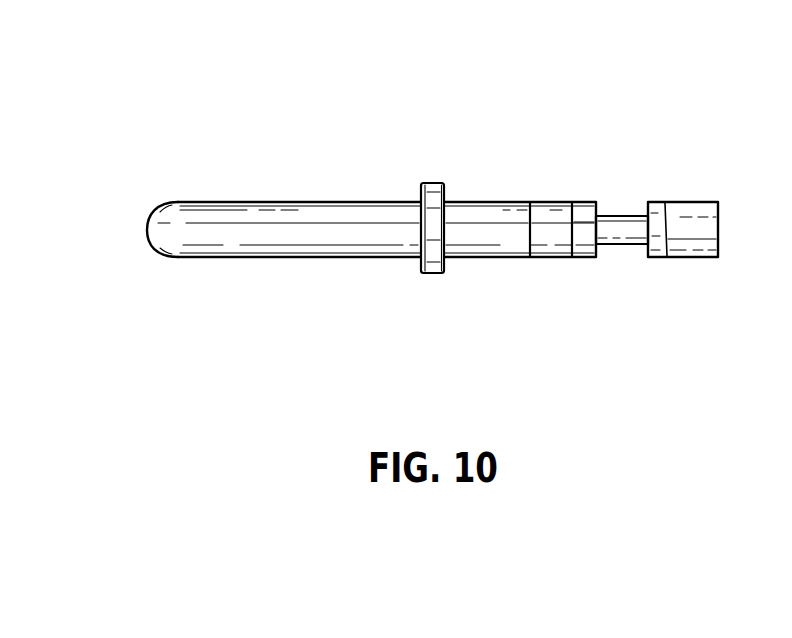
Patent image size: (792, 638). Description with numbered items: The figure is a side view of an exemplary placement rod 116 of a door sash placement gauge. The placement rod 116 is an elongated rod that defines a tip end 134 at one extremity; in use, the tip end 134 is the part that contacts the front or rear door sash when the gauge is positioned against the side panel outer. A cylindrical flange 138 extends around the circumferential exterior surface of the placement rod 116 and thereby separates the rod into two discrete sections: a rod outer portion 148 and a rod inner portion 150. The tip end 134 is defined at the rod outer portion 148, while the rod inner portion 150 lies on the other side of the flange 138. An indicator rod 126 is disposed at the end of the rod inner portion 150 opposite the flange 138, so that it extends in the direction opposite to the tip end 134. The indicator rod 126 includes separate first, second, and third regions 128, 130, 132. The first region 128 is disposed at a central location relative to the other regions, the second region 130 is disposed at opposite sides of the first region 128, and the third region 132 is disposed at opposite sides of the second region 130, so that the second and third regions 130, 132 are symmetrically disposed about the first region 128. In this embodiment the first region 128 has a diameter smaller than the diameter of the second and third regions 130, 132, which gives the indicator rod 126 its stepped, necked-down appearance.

The placement rod 116 is at (212, 268).
The indicator rod 126 is at (675, 264).
The first region 128 is at (617, 216).
The second region 130 is at (655, 202).
The third region 132 is at (552, 202).
The tip end 134 is at (149, 228).
The cylindrical flange 138 is at (428, 273).
The rod outer portion 148 is at (245, 202).
The rod inner portion 150 is at (513, 202).